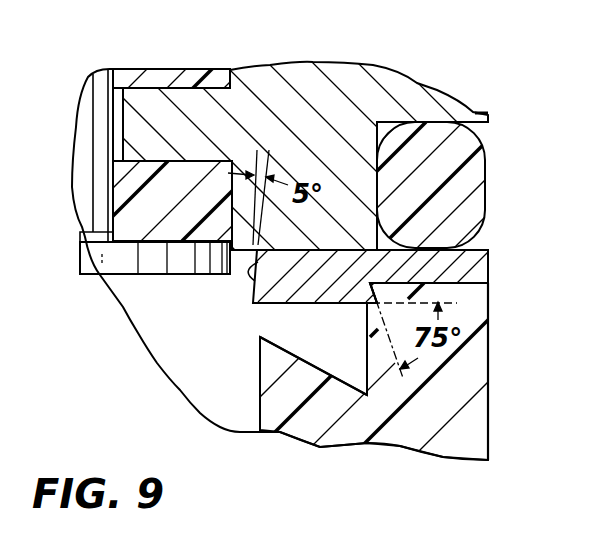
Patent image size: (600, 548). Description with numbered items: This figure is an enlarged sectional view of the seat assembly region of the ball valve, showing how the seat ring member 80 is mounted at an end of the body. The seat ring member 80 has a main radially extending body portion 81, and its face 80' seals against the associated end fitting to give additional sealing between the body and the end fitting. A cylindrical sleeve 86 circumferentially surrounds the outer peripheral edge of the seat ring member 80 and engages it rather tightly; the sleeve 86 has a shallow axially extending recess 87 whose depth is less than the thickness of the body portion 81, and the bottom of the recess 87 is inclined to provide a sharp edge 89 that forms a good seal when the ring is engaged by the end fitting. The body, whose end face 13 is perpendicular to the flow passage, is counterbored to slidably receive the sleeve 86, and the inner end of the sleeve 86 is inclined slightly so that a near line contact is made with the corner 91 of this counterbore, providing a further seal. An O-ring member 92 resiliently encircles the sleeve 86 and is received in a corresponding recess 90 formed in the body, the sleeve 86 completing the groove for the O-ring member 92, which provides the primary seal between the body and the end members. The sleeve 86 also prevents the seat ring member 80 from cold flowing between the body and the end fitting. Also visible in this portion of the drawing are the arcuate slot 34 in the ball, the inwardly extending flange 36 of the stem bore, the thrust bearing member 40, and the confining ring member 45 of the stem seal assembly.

The end face 13 is at (490, 115).
The arcuate slot 34 is at (160, 265).
The flange 36 is at (113, 121).
The thrust bearing member 40 is at (112, 232).
The ring member 45 is at (160, 74).
The seat ring member 80 is at (392, 378).
The face 80' is at (531, 371).
The body portion 81 is at (430, 365).
The sleeve 86 is at (475, 265).
The recess 87 is at (467, 287).
The sharp edge 89 is at (366, 304).
The recess 90 is at (475, 123).
The corner 91 is at (247, 274).
The O-ring member 92 is at (475, 208).